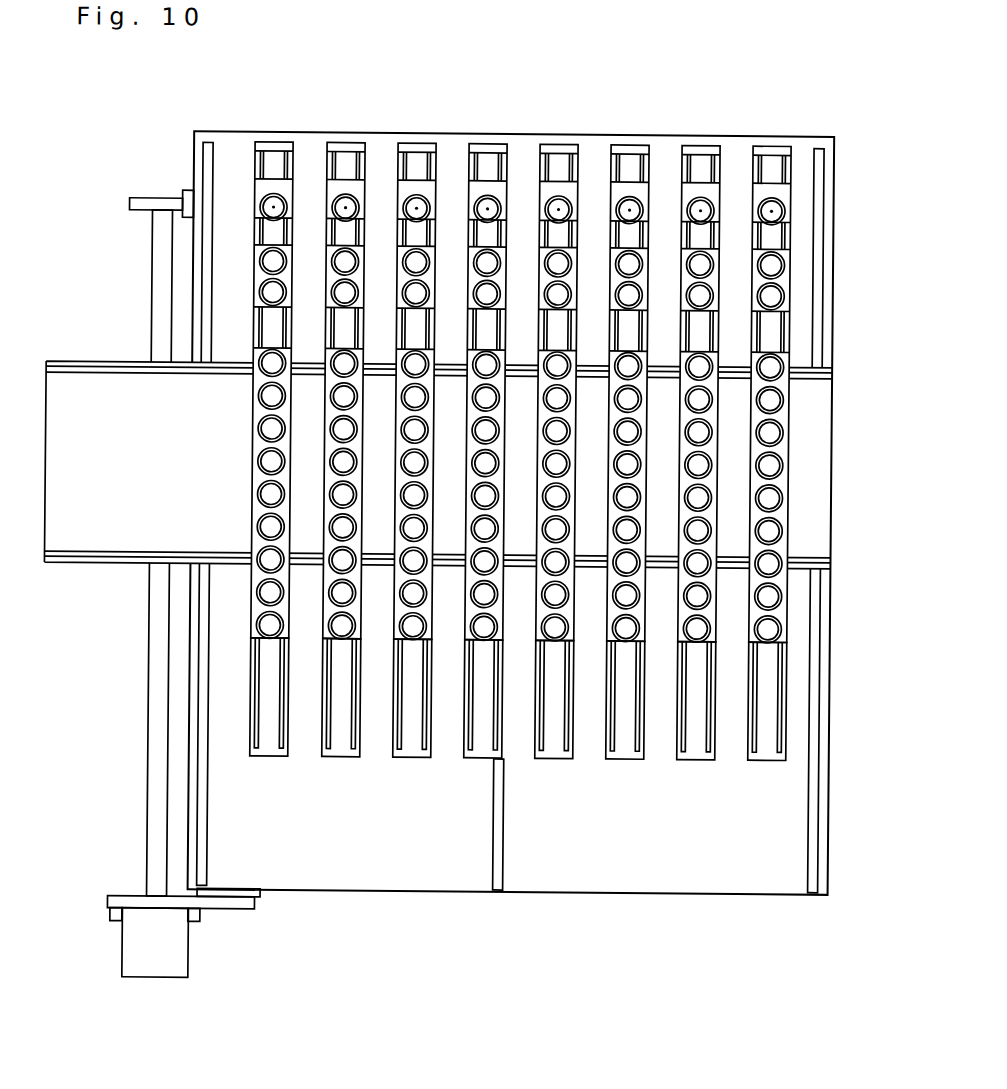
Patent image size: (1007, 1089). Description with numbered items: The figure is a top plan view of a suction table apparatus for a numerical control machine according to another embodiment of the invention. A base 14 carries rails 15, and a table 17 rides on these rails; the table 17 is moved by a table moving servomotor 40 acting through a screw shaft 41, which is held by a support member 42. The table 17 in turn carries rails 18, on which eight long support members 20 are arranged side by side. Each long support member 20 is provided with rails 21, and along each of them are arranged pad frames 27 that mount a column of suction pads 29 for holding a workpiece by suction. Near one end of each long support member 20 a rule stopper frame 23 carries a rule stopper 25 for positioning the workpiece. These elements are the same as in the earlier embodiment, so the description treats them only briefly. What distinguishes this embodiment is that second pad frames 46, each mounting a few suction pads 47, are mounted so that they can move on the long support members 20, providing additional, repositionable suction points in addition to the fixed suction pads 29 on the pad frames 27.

The base 14 is at (388, 876).
The rails 15 is at (206, 840).
The table 17 is at (94, 384).
The rails 18 is at (160, 374).
The long support members 20 is at (625, 754).
The rails 21 is at (334, 748).
The rule stopper frames 23 is at (487, 191).
The rule stoppers 25 is at (282, 197).
The pad frames 27 is at (787, 419).
The suction pads 29 is at (775, 531).
The table moving servomotor 40 is at (132, 961).
The screw shaft 41 is at (160, 678).
The support member 42 is at (145, 207).
The second pad frames 46 is at (783, 257).
The suction pads 47 is at (778, 266).